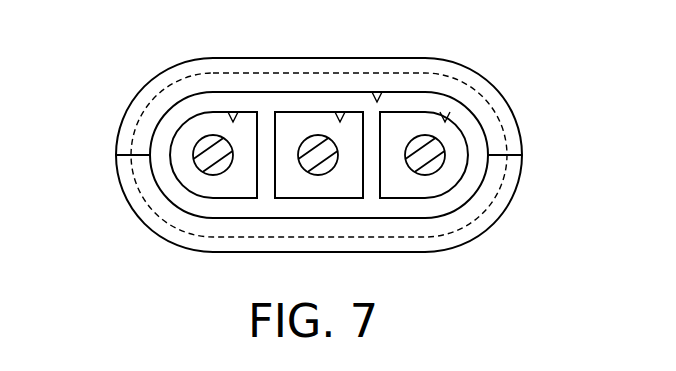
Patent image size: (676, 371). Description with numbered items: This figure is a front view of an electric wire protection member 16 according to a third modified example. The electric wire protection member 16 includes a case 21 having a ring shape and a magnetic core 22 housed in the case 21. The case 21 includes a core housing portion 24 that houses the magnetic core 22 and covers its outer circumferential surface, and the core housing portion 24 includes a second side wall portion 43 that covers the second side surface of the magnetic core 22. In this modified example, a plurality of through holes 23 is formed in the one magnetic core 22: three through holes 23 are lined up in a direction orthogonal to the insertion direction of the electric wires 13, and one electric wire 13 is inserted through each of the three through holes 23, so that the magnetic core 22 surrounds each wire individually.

The electric wire 13 is at (199, 140).
The electric wire protection member 16 is at (158, 72).
The case 21 is at (488, 82).
The magnetic core 22 is at (167, 130).
The through hole 23 is at (233, 114).
The core housing portion 24 is at (373, 94).
The second side wall portion 43 is at (148, 195).